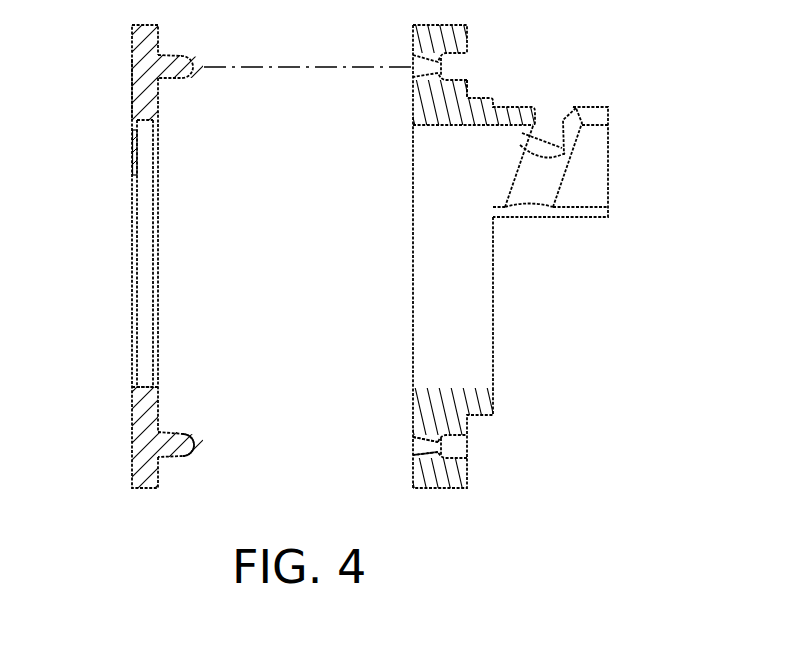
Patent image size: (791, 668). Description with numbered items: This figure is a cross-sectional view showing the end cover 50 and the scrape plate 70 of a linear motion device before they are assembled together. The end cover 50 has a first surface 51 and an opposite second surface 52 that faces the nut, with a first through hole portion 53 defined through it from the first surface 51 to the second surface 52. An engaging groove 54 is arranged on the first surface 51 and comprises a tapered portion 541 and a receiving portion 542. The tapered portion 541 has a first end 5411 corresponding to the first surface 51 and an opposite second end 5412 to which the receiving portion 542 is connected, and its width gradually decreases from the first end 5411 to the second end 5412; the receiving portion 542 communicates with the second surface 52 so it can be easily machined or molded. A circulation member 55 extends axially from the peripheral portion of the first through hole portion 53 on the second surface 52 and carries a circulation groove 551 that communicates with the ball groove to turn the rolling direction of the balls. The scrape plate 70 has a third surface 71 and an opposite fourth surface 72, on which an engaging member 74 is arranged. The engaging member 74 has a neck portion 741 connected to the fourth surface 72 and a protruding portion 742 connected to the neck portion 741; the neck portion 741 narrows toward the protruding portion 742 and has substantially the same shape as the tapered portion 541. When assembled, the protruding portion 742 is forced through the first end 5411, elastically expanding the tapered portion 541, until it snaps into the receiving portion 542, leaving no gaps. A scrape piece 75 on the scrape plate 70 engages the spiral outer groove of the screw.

The end cover 50 is at (455, 37).
The first surface 51 is at (404, 103).
The second surface 52 is at (476, 83).
The first through hole portion 53 is at (470, 345).
The engaging groove 54 is at (455, 465).
The tapered portion 541 is at (322, 420).
The first end 5411 is at (413, 452).
The second end 5412 is at (413, 440).
The receiving portion 542 is at (462, 445).
The circulation member 55 is at (533, 212).
The circulation groove 551 is at (595, 172).
The scrape plate 70 is at (132, 40).
The third surface 71 is at (123, 90).
The fourth surface 72 is at (167, 38).
The engaging member 74 is at (186, 460).
The neck portion 741 is at (140, 450).
The protruding portion 742 is at (189, 431).
The scrape piece 75 is at (132, 163).